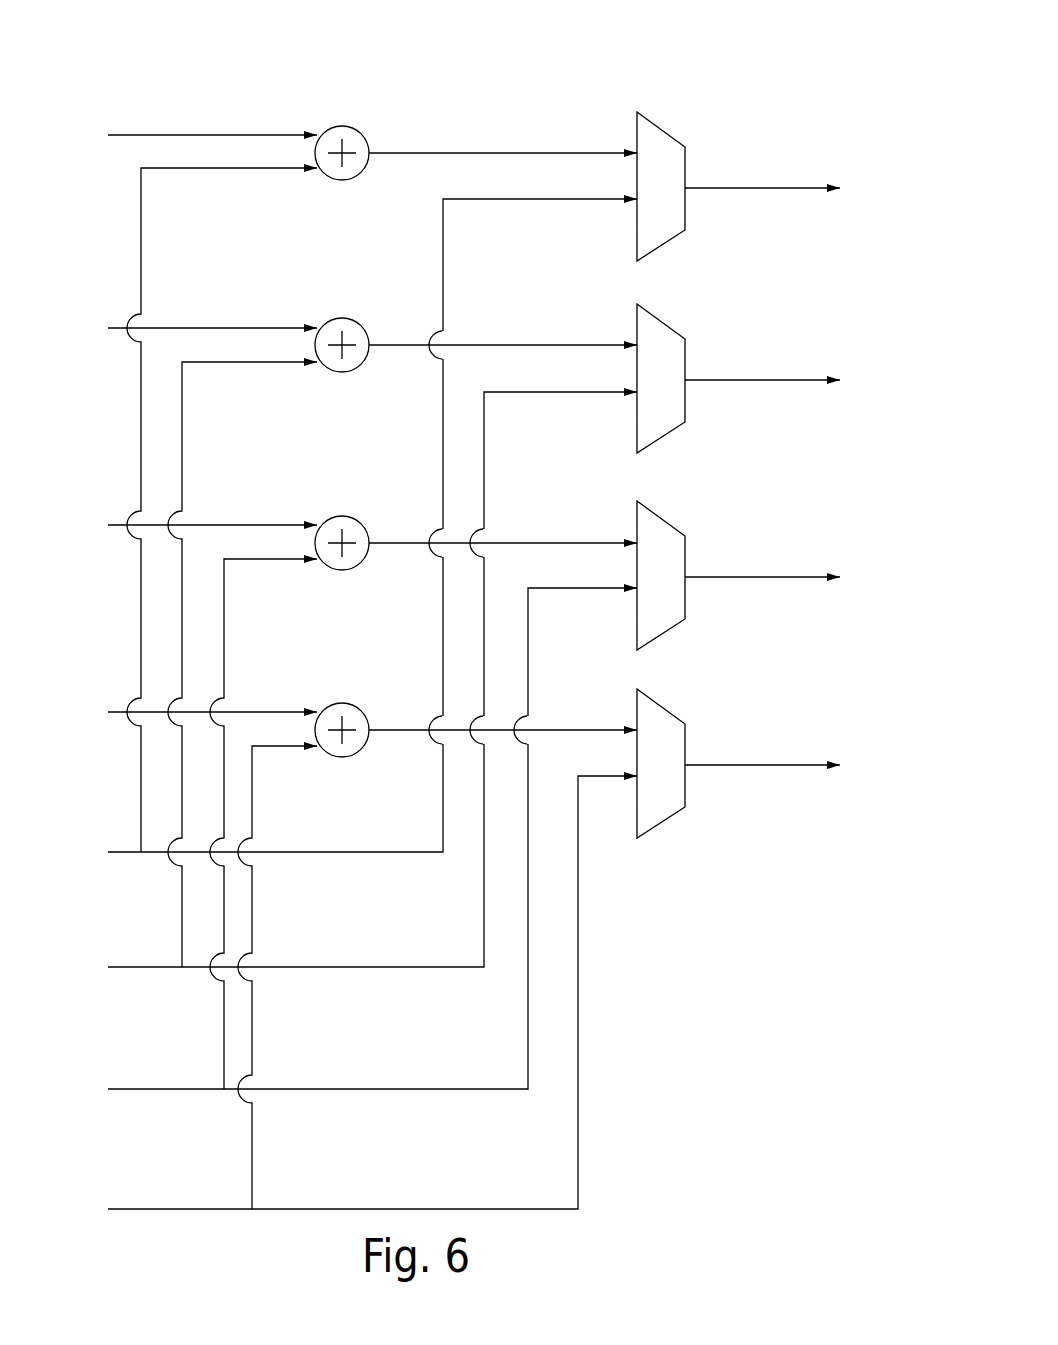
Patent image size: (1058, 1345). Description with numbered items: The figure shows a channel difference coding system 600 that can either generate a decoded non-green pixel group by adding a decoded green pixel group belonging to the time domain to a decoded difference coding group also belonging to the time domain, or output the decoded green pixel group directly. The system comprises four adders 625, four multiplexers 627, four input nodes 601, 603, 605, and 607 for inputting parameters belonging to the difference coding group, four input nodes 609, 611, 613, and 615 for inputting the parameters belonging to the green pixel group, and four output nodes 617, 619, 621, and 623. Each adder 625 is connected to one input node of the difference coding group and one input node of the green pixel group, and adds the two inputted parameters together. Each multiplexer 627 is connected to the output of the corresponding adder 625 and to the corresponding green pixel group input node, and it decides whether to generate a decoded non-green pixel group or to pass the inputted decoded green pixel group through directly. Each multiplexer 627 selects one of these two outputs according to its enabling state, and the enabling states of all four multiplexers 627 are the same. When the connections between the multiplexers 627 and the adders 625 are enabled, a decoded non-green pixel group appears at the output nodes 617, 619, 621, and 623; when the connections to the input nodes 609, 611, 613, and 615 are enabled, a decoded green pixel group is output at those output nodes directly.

The channel difference coding system 600 is at (569, 98).
The input node 601 is at (187, 135).
The input node 603 is at (187, 328).
The input node 605 is at (187, 525).
The input node 607 is at (187, 712).
The input node 609 is at (347, 517).
The input node 611 is at (347, 672).
The input node 613 is at (347, 831).
The input node 615 is at (347, 985).
The output node 617 is at (785, 188).
The output node 619 is at (785, 380).
The output node 621 is at (785, 577).
The output node 623 is at (785, 765).
The adder 625 is at (365, 134).
The multiplexer 627 is at (687, 161).